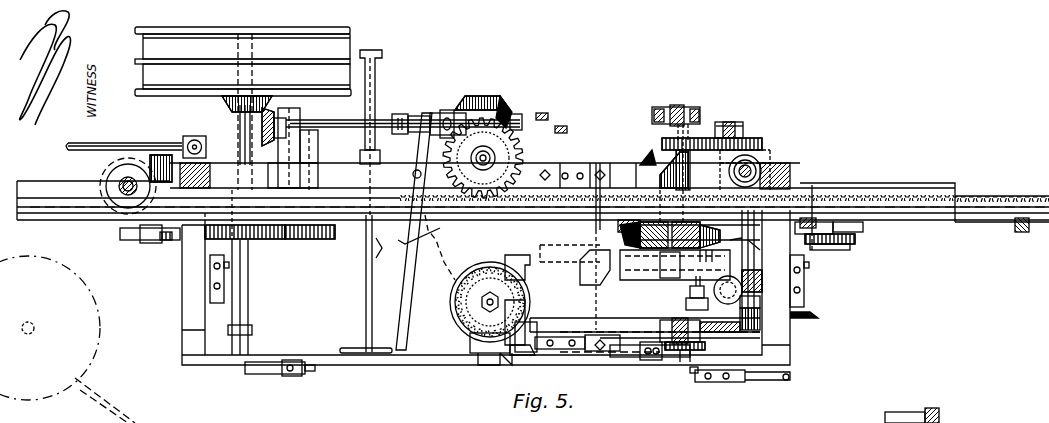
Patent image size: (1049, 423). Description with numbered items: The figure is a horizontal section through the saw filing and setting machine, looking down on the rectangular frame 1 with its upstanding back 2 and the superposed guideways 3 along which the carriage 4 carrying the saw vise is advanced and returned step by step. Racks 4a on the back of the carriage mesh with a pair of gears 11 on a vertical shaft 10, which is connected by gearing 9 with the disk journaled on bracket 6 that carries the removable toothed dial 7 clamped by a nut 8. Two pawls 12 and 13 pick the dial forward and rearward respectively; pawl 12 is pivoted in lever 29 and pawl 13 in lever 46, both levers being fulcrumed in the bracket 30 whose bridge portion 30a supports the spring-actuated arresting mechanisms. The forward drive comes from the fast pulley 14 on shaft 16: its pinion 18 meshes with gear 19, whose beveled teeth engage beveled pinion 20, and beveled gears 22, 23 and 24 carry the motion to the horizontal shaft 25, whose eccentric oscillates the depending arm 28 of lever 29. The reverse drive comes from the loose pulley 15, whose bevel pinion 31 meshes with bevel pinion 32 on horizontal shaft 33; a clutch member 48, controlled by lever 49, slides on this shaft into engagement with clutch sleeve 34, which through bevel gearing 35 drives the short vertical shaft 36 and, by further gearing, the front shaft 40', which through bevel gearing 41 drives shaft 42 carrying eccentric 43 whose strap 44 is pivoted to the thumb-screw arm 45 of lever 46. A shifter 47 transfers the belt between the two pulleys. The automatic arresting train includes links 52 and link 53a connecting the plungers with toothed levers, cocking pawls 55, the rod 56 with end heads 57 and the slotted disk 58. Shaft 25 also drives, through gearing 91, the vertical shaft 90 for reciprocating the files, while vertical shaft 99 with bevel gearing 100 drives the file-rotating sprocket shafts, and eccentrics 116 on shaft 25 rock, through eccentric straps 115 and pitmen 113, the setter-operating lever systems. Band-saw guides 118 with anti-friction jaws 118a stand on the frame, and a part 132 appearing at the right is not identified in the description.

The frame 1 is at (792, 316).
The back 2 is at (782, 164).
The guideways 3 is at (856, 190).
The carriage 4 is at (975, 215).
The racks 4a is at (975, 198).
The bracket 6 is at (452, 258).
The dial 7 is at (452, 305).
The nut 8 is at (500, 303).
The gearing 9 is at (417, 241).
The vertical shaft 10 is at (505, 128).
The gears 11 is at (518, 154).
The pawl 12 is at (476, 340).
The pawl 13 is at (505, 262).
The fast pulley 14 is at (144, 44).
The loose pulley 15 is at (144, 74).
The shaft 16 is at (238, 125).
The pinion 18 is at (262, 240).
The gear 19 is at (320, 240).
The beveled pinion 20 is at (300, 142).
The beveled gear 22 is at (648, 152).
The beveled gear 23 is at (668, 160).
The beveled gear 24 is at (640, 240).
The horizontal shaft 25 is at (720, 300).
The depending arm 28 is at (676, 356).
The lever 29 is at (630, 340).
The bracket 30 is at (556, 352).
The bridge portion 30a is at (580, 318).
The bevel pinion 31 is at (224, 99).
The bevel pinion 32 is at (262, 135).
The horizontal shaft 33 is at (330, 128).
The clutch sleeve 34 is at (448, 113).
The bevel gearing 35 is at (500, 96).
The short vertical shaft 36 is at (480, 96).
The bearing 40' is at (600, 360).
The bevel gearing 41 is at (732, 382).
The shaft 42 is at (756, 258).
The eccentric 43 is at (760, 280).
The eccentric strap 44 is at (760, 290).
The arm 45 is at (688, 298).
The lever 46 is at (610, 270).
The shifter 47 is at (366, 282).
The clutch member 48 is at (400, 114).
The controlling lever 49 is at (410, 296).
The links 52 is at (650, 280).
The link 53a is at (384, 256).
The pawl 55 is at (844, 250).
The rod 56 is at (598, 165).
The head or block 57 is at (864, 229).
The disk 58 is at (812, 200).
The vertical shaft 90 is at (752, 158).
The gearing 91 is at (738, 122).
The vertical shaft 99 is at (122, 200).
The bevel gearing 100 is at (150, 156).
The pitmen 113 is at (550, 116).
The eccentric straps 115 is at (660, 244).
The eccentrics 116 is at (701, 244).
The guides 118 is at (224, 288).
The anti-friction jaws 118a is at (268, 376).
The hand wheel 132 is at (684, 107).